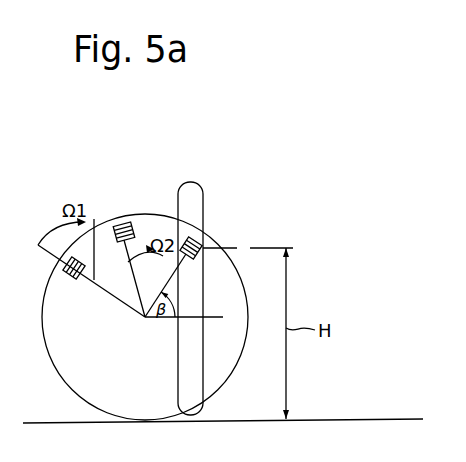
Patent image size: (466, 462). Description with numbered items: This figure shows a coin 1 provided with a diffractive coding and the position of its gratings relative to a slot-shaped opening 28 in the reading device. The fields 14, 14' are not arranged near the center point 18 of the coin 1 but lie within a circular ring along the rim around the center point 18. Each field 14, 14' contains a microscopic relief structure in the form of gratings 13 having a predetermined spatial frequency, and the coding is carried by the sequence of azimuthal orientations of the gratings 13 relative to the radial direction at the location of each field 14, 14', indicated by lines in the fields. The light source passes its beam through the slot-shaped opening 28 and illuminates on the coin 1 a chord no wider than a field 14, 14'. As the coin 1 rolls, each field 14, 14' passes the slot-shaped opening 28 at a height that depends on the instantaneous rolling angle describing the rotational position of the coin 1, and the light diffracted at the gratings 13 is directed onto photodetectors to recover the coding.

The coin 1 is at (77, 382).
The grating 13 is at (128, 218).
The field 14 is at (91, 222).
The field 14' is at (98, 194).
The center point 18 is at (146, 250).
The slot-shaped opening 28 is at (195, 191).